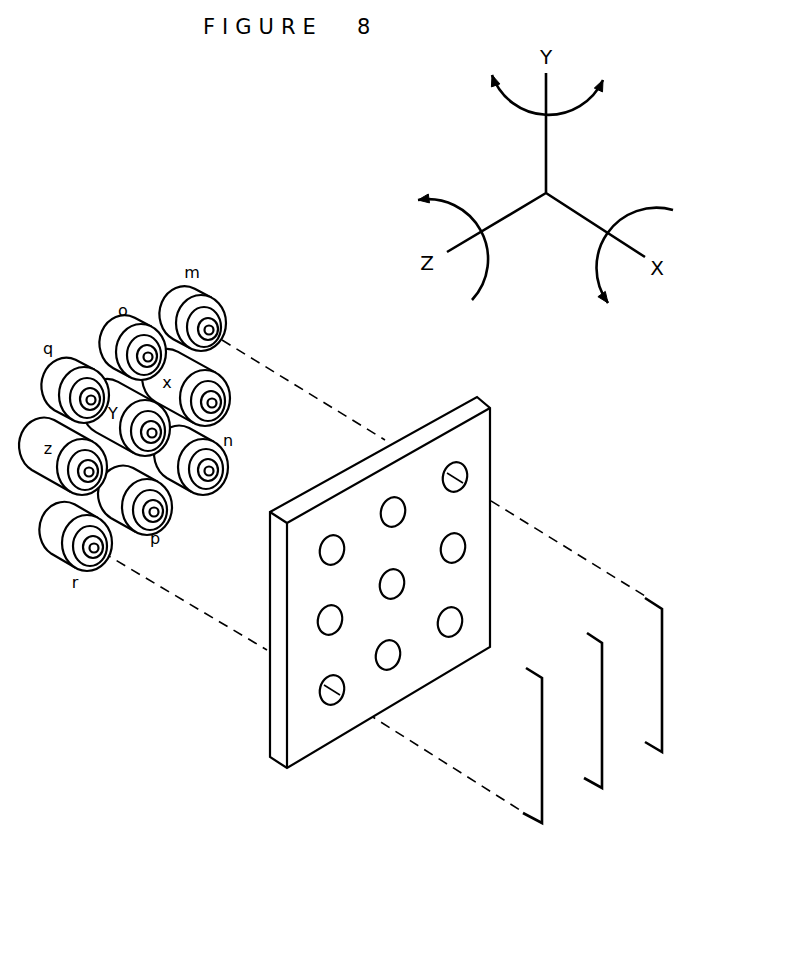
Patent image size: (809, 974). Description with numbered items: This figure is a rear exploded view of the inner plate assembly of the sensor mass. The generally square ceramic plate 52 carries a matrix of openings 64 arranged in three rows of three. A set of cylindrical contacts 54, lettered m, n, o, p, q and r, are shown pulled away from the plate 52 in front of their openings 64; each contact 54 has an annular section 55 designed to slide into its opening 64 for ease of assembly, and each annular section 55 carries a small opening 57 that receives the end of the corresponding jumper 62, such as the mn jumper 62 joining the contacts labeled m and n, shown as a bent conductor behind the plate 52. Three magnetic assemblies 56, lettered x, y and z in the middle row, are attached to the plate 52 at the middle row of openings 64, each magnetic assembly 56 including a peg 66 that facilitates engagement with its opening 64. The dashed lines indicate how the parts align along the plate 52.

The plate 52 is at (477, 442).
The contacts 54 is at (220, 293).
The annular section 55 is at (212, 326).
The magnetic assemblies 56 is at (181, 370).
The small opening 57 is at (90, 396).
The jumper 62 is at (657, 603).
The openings 64 is at (462, 474).
The peg 66 is at (208, 388).